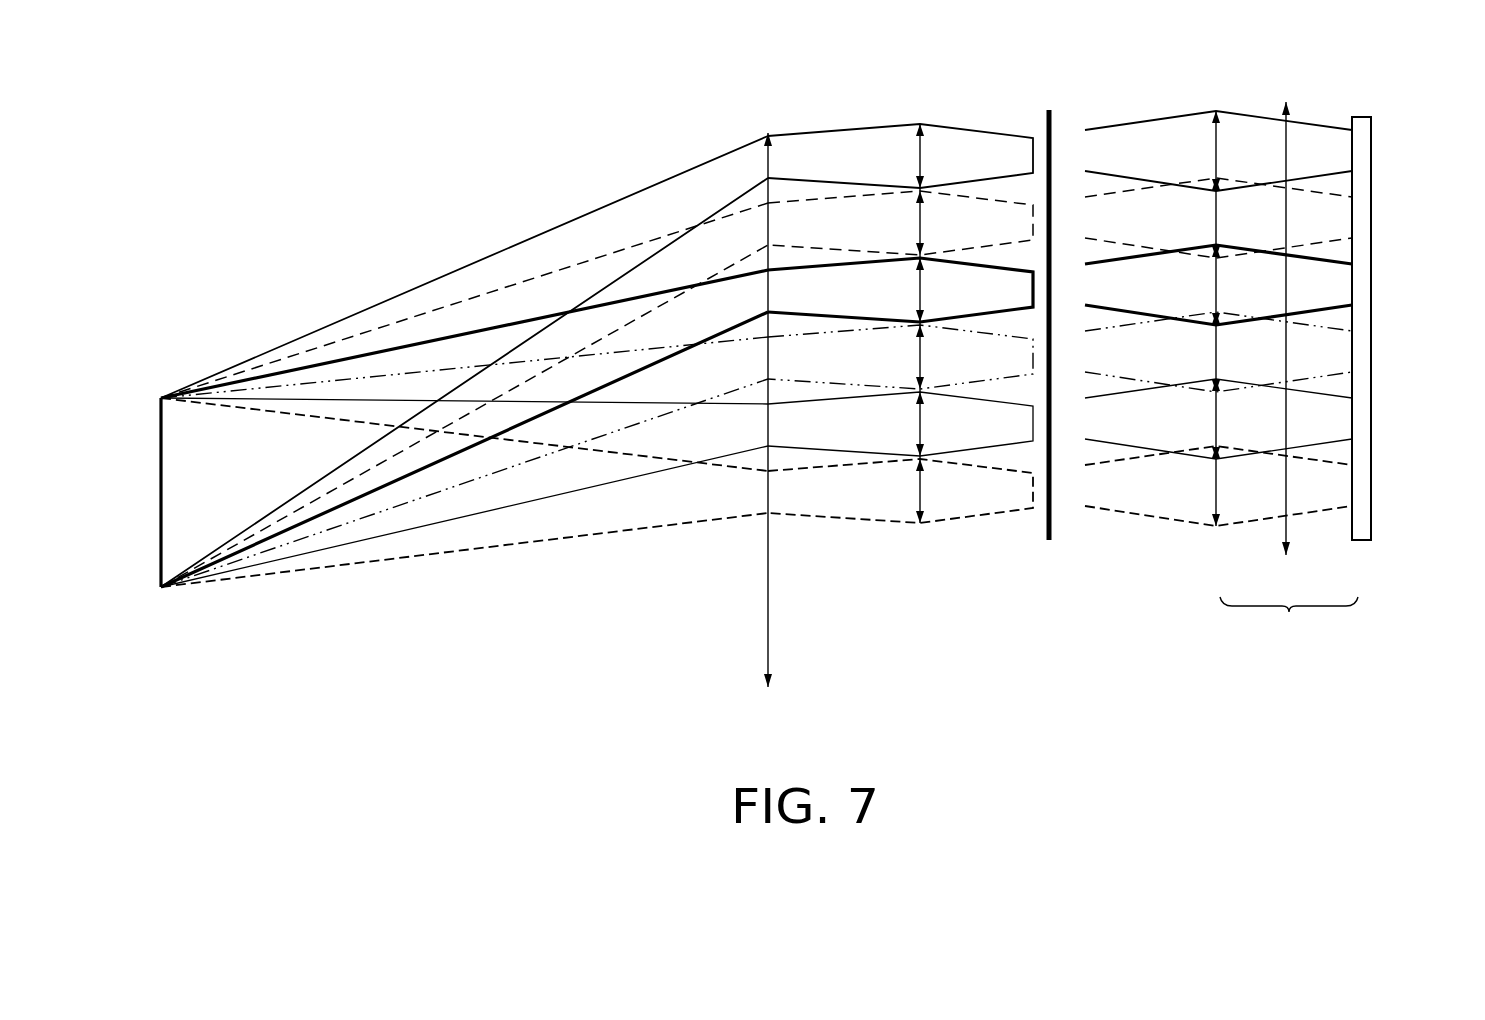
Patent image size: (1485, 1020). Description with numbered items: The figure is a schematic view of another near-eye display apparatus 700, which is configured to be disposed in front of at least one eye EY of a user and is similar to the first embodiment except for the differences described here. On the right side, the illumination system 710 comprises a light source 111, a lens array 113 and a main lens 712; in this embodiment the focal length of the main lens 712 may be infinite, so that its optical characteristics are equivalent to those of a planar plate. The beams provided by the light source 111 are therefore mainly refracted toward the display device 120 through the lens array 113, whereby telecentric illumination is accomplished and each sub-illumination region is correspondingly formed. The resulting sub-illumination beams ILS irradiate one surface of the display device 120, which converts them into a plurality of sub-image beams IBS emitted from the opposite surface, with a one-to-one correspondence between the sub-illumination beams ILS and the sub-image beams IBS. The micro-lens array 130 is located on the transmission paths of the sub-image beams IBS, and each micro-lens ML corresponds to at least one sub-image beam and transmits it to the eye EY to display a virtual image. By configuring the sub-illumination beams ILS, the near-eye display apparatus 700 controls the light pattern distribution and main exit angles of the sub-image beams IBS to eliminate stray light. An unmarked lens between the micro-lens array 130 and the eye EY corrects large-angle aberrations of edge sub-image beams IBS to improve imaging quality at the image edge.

The micro-lens array 130 is at (919, 110).
The display device 120 is at (1052, 522).
The light source 111 is at (1368, 120).
The main lens 712 is at (1287, 140).
The lens array 113 is at (1216, 493).
The illumination system 710 is at (1327, 353).
The near-eye display apparatus 700 is at (1452, 721).
The sub-image beams IBS is at (989, 200).
The sub-illumination beams ILS is at (1120, 193).
The micro-lens ML is at (918, 493).
The eye EY is at (161, 540).